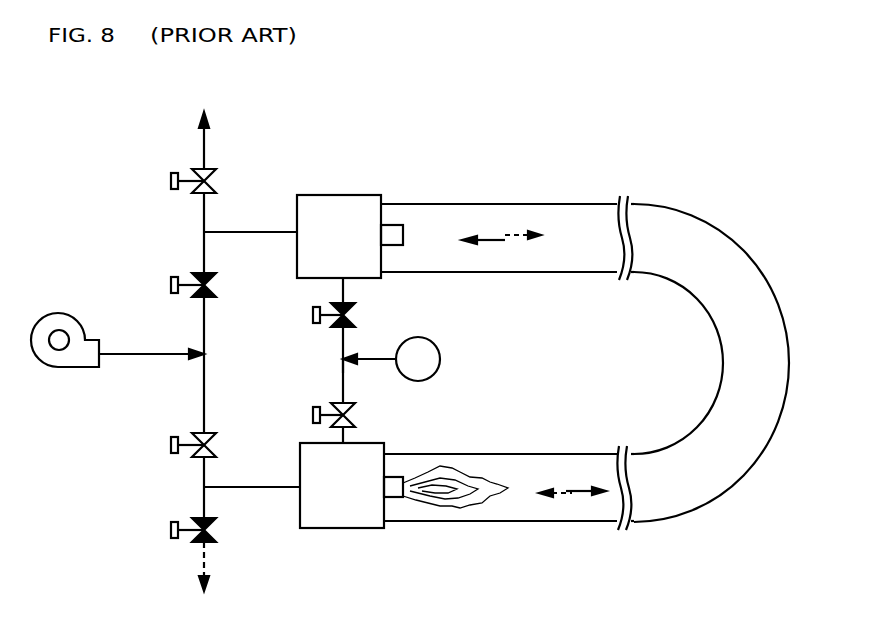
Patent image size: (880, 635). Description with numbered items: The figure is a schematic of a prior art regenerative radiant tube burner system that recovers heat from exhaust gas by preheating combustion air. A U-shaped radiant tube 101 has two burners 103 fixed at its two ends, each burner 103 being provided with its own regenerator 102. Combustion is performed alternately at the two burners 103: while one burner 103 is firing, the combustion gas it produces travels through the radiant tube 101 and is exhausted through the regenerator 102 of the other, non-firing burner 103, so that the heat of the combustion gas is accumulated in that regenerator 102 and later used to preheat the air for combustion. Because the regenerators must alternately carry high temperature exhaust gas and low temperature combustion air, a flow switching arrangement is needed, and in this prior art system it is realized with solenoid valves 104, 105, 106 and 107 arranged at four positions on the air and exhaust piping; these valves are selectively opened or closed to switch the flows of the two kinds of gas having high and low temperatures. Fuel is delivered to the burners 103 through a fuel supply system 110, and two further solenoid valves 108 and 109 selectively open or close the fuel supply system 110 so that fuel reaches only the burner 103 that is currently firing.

The radiant tube 101 is at (778, 379).
The regenerator 102 is at (337, 202).
The burner 103 is at (395, 228).
The solenoid valve 104 is at (216, 176).
The solenoid valve 105 is at (216, 289).
The solenoid valve 106 is at (216, 439).
The solenoid valve 107 is at (216, 526).
The solenoid valve 108 is at (356, 311).
The solenoid valve 109 is at (356, 418).
The fuel supply system 110 is at (343, 368).